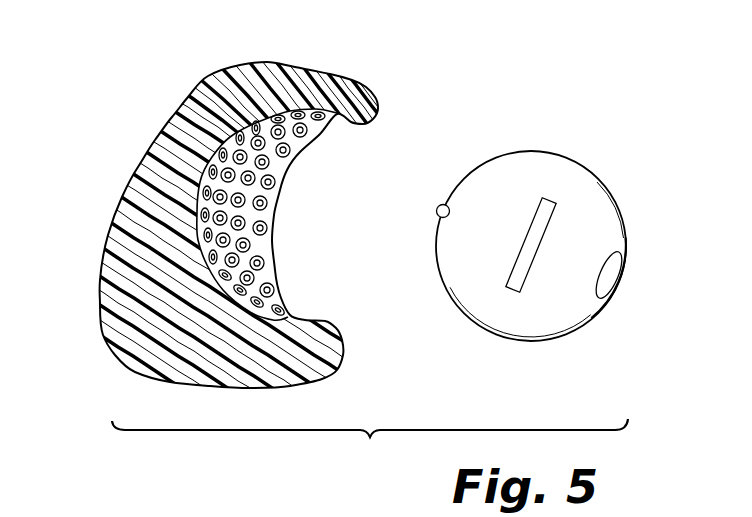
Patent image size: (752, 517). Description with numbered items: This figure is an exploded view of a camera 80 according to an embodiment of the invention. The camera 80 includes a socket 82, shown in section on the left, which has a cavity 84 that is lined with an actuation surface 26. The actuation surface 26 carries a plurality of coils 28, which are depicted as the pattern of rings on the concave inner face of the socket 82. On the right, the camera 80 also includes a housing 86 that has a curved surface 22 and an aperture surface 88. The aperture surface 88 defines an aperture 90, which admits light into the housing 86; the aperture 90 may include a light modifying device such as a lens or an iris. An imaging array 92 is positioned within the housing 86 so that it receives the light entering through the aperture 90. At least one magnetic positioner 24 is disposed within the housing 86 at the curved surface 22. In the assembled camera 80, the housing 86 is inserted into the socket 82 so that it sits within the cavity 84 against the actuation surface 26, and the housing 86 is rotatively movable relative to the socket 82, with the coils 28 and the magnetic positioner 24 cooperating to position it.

The camera 80 is at (358, 241).
The socket 82 is at (209, 76).
The actuation surface 26 is at (273, 261).
The coils 28 is at (268, 226).
The cavity 84 is at (336, 282).
The curved surface 22 is at (539, 266).
The magnetic positioner 24 is at (438, 206).
The housing 86 is at (599, 204).
The aperture surface 88 is at (584, 305).
The aperture 90 is at (628, 285).
The imaging array 92 is at (525, 286).